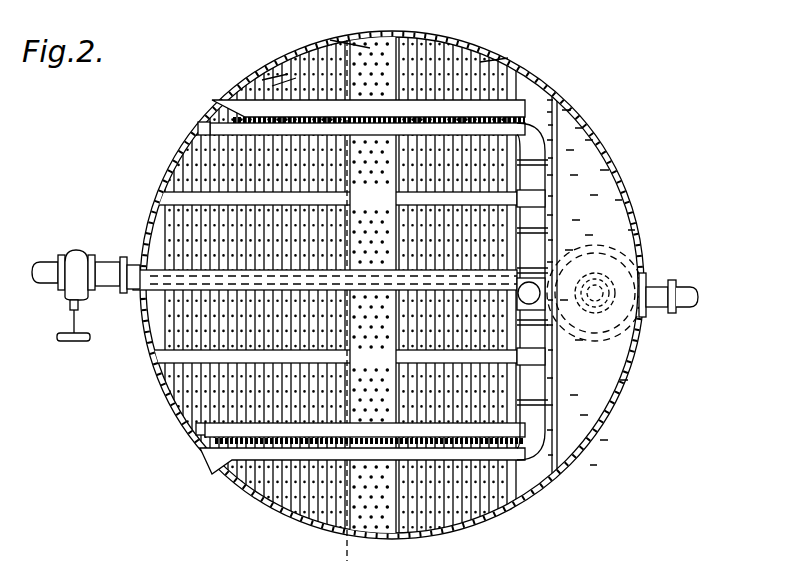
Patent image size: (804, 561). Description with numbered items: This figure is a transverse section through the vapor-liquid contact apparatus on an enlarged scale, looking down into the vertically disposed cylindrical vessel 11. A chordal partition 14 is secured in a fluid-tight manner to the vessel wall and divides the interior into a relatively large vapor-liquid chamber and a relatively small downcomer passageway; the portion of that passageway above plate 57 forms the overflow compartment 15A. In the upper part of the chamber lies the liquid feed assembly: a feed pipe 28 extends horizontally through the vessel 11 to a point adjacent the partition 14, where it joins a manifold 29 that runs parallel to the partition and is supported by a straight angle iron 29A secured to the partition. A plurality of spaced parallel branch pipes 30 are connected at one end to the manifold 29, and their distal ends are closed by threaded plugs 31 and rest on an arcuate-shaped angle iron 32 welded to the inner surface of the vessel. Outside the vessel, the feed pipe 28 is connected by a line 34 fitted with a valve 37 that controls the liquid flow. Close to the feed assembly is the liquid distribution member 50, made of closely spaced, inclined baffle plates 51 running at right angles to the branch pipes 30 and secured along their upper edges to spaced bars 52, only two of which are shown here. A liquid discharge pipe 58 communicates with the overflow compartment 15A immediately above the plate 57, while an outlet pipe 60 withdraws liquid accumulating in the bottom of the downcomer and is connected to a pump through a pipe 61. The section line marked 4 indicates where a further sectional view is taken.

The section line 4- 4 is at (336, 557).
The cylindrical shell or vessel 11 is at (624, 188).
The chordal wall or partition 14 is at (560, 144).
The overflow compartment 15A is at (549, 412).
The feed pipe 28 is at (180, 292).
The manifold 29 is at (540, 368).
The straight angle iron 29A is at (534, 480).
The branch pipes 30 is at (312, 193).
The threaded plugs 31 is at (158, 192).
The arcuate-shaped angle iron 32 is at (222, 450).
The line 34 is at (110, 290).
The valve 37 is at (79, 254).
The liquid distribution member 50 is at (508, 70).
The baffle plates 51 is at (284, 72).
The spaced bars 52 is at (318, 106).
The plate 57 is at (605, 212).
The liquid discharge pipe 58 is at (680, 290).
The outlet pipe 60 is at (622, 323).
The pipe 61 is at (640, 256).